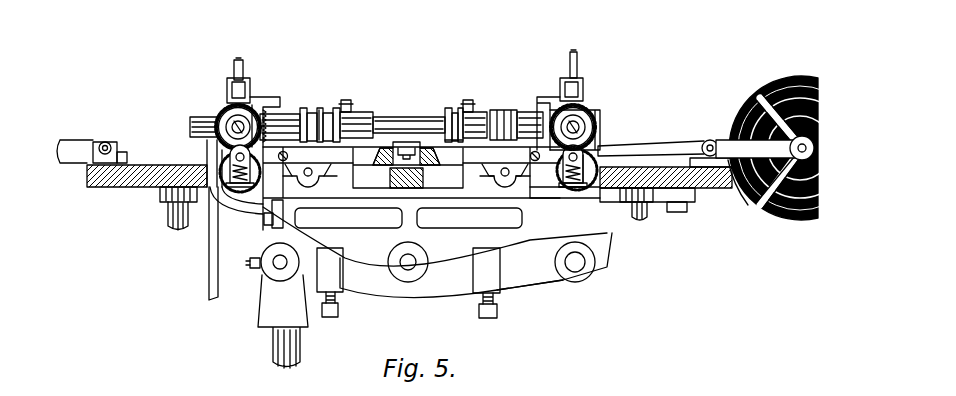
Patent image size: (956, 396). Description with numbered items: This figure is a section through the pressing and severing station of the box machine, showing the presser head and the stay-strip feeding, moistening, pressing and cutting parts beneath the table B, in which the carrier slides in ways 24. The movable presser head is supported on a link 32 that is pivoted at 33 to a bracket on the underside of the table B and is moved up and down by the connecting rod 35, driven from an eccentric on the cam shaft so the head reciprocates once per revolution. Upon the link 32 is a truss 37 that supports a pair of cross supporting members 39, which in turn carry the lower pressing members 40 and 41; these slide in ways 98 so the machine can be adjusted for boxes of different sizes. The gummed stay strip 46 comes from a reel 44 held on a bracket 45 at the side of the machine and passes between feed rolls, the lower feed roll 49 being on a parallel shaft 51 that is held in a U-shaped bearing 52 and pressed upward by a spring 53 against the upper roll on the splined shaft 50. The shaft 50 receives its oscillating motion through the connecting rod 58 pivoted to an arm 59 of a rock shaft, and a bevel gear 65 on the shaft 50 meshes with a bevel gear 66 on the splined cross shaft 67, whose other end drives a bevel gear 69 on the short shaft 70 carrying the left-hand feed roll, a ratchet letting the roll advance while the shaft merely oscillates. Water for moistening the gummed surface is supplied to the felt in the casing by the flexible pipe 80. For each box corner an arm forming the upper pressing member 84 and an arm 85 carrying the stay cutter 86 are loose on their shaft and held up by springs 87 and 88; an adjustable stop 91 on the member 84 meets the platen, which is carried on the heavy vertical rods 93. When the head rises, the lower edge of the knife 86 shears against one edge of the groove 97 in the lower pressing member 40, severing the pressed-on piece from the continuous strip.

The table B is at (160, 161).
The vertical rods 93 is at (167, 219).
The connecting rod 58 is at (205, 272).
The bevel gear 69 is at (222, 100).
The short shaft 70 is at (248, 113).
The groove 97 is at (342, 152).
The flexible pipe 80 is at (231, 55).
The spring 87 is at (368, 116).
The lower pressing member 41 is at (314, 105).
The spring 88 is at (325, 102).
The upper pressing member 84 is at (356, 126).
The adjustable stop 91 is at (349, 93).
The cross shaft 67 is at (414, 117).
The stay cutter arm 85 is at (491, 109).
The ways 24 is at (385, 148).
The cross supporting members 39 is at (491, 188).
The arm 59 is at (339, 188).
The stay cutter 86 is at (451, 158).
The lower pressing member 40 is at (507, 157).
The ways 98 is at (530, 176).
The truss 37 is at (441, 256).
The link 32 is at (535, 270).
The pivot 33 is at (585, 266).
The connecting rod 35 is at (278, 357).
The U-shaped bearing 52 is at (560, 194).
The spring 53 is at (580, 167).
The bevel gear 66 is at (564, 105).
The splined shaft 50 is at (584, 104).
The bevel gear 65 is at (603, 113).
The lower feed roll 49 is at (593, 137).
The parallel shaft 51 is at (611, 148).
The stay strip 46 is at (673, 147).
The reel 44 is at (796, 219).
The bracket 45 is at (755, 211).